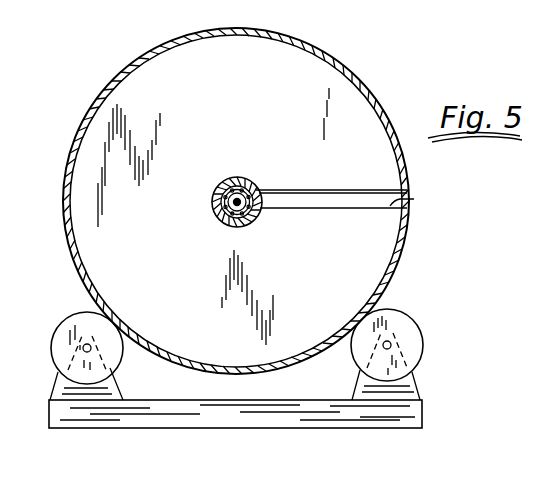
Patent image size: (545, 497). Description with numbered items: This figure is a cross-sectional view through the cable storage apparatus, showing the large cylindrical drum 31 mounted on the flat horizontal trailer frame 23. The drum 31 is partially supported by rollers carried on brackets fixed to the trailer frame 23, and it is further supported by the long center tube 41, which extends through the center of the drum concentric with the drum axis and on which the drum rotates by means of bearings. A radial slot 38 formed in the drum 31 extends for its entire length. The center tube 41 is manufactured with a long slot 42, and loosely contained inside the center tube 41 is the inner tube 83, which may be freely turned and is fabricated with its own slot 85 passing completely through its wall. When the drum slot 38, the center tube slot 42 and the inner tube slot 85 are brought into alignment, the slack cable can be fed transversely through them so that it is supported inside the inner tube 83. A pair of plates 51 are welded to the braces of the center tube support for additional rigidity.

The trailer frame 23 is at (425, 409).
The cylindrical drum 31 is at (411, 240).
The radial slot 38 is at (414, 199).
The center tube 41 is at (238, 180).
The long slot 42 is at (280, 191).
The plates 51 is at (237, 202).
The inner tube 83 is at (240, 226).
The slot 85 is at (254, 206).